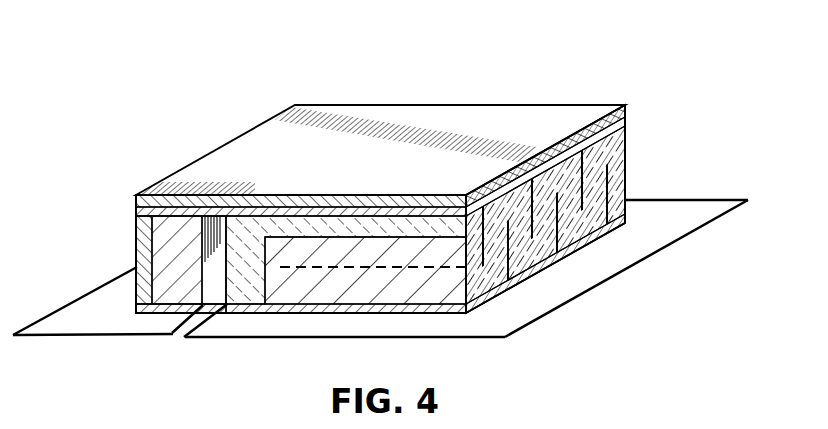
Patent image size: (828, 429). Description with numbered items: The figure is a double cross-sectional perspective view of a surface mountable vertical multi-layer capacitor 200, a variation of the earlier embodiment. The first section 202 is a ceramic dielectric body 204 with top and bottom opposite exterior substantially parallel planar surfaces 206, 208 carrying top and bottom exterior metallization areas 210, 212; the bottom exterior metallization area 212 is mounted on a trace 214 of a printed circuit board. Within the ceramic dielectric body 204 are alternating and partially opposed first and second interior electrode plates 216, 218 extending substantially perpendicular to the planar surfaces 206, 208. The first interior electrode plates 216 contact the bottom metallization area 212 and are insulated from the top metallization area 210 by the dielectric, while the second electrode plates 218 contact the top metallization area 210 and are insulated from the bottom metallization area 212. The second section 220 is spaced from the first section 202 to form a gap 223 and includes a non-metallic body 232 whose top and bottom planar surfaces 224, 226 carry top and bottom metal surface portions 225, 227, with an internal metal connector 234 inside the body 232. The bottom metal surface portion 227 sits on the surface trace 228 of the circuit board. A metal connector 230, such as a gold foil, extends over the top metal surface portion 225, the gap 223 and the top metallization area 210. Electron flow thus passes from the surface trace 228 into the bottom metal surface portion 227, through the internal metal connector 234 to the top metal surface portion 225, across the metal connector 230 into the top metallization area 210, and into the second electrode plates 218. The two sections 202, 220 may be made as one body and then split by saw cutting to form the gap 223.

The surface mountable vertical multi-layer capacitor 200 is at (162, 62).
The first section 202 is at (690, 126).
The ceramic dielectric body 204 is at (626, 141).
The top exterior planar surface 206 is at (597, 135).
The bottom exterior planar surface 208 is at (586, 236).
The top exterior metallization area 210 is at (602, 128).
The bottom exterior metallization area 212 is at (627, 219).
The trace 214 is at (721, 204).
The first interior electrode plates 216 is at (293, 283).
The second interior electrode plates 218 is at (380, 272).
The second section 220 is at (103, 227).
The gap 223 is at (213, 283).
The top exterior planar surface 224 is at (185, 192).
The top metal surface portion 225 is at (152, 200).
The bottom exterior planar surface 226 is at (170, 308).
The bottom metal surface portion 227 is at (148, 306).
The surface trace 228 is at (45, 327).
The metal connector 230 is at (440, 105).
The non-metallic body 232 is at (137, 253).
The internal metal connector 234 is at (137, 305).